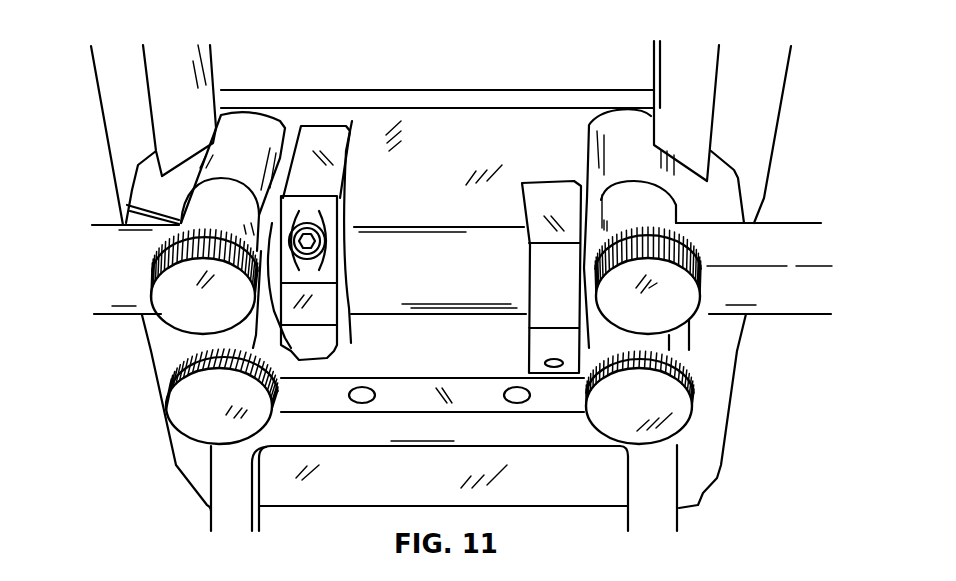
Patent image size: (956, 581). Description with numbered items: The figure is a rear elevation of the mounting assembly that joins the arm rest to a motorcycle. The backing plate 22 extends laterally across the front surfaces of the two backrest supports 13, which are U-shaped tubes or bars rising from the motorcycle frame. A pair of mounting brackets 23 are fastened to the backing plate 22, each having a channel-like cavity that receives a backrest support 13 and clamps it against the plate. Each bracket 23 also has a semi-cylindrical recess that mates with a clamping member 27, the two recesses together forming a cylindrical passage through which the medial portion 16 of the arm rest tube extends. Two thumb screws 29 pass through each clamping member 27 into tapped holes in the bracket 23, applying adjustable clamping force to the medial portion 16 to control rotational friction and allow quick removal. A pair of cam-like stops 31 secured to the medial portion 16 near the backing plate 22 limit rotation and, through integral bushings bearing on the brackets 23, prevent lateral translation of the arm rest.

The backrest support 13 is at (148, 112).
The medial portion 16 is at (93, 307).
The backing plate 22 is at (361, 90).
The mounting bracket 23 is at (137, 187).
The clamping member 27 is at (646, 200).
The thumb screw 29 is at (175, 300).
The cam-like stop 31 is at (295, 153).